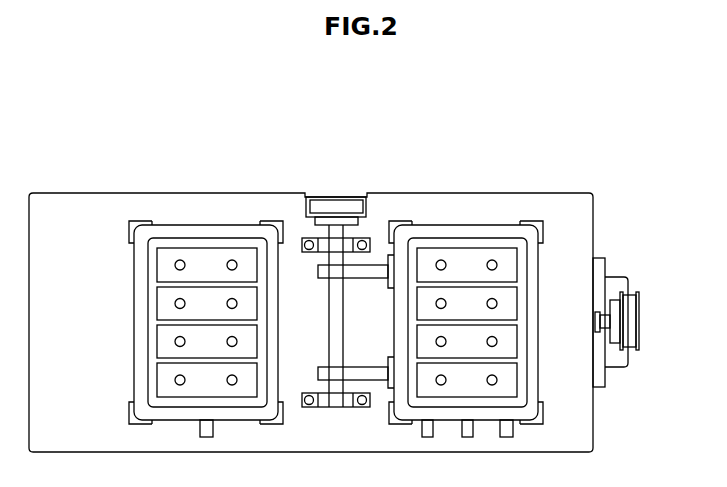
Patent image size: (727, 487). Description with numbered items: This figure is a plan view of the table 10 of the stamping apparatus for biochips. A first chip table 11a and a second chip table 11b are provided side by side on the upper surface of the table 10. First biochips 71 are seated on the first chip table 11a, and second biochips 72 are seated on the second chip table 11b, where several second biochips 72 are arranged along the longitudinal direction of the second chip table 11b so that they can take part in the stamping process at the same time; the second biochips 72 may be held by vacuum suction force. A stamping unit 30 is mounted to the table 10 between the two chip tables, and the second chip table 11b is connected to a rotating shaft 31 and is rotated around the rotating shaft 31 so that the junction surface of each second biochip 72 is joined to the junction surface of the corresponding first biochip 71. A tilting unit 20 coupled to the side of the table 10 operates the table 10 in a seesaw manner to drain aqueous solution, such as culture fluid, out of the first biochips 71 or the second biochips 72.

The table 10 is at (562, 186).
The first chip table 11a is at (206, 280).
The second chip table 11b is at (465, 279).
The tilting unit 20 is at (645, 356).
The stamping unit 30 is at (330, 186).
The rotating shaft 31 is at (335, 297).
The first biochip 71 is at (208, 262).
The second biochip 72 is at (465, 262).